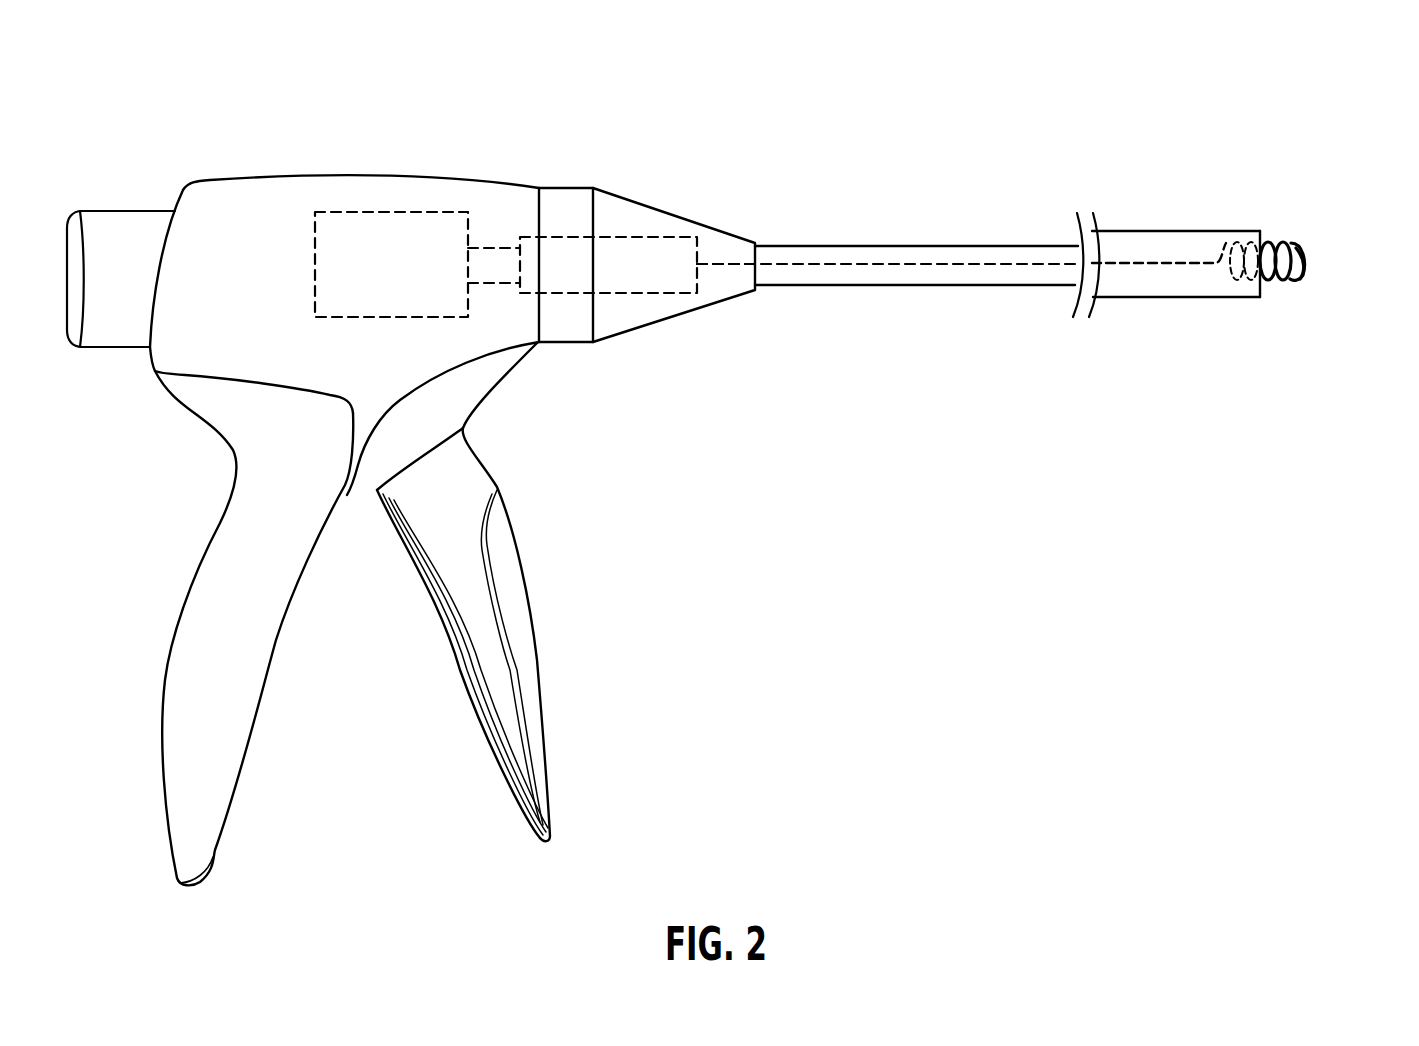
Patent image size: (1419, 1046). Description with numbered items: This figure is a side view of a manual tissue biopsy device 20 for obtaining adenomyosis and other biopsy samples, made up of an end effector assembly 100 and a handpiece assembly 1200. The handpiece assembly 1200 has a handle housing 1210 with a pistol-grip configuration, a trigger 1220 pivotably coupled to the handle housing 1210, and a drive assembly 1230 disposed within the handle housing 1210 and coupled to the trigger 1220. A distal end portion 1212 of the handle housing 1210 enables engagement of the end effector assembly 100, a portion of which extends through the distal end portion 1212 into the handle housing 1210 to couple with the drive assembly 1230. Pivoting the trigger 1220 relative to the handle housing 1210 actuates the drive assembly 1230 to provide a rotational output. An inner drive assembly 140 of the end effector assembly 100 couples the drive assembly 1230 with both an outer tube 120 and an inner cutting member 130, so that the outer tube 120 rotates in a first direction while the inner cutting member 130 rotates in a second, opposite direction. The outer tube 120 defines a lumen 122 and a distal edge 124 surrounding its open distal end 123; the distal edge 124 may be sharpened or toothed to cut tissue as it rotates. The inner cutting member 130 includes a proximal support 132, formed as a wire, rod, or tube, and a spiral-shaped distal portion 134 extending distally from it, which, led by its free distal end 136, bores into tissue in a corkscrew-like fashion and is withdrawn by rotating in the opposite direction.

The device 20 is at (574, 106).
The end effector assembly 100 is at (1262, 116).
The handpiece assembly 1200 is at (540, 117).
The handle housing 1210 is at (421, 176).
The distal end portion 1212 is at (493, 203).
The drive assembly 1230 is at (334, 210).
The inner drive assembly 140 is at (652, 297).
The trigger 1220 is at (540, 753).
The outer tube 120 is at (933, 287).
The inner cutting member 130 is at (984, 262).
The proximal support 132 is at (720, 261).
The lumen 122 is at (1108, 280).
The open distal end 123 is at (1222, 298).
The distal edge 124 is at (1262, 240).
The spiral-shaped distal portion 134 is at (1304, 214).
The free distal end 136 is at (1311, 266).